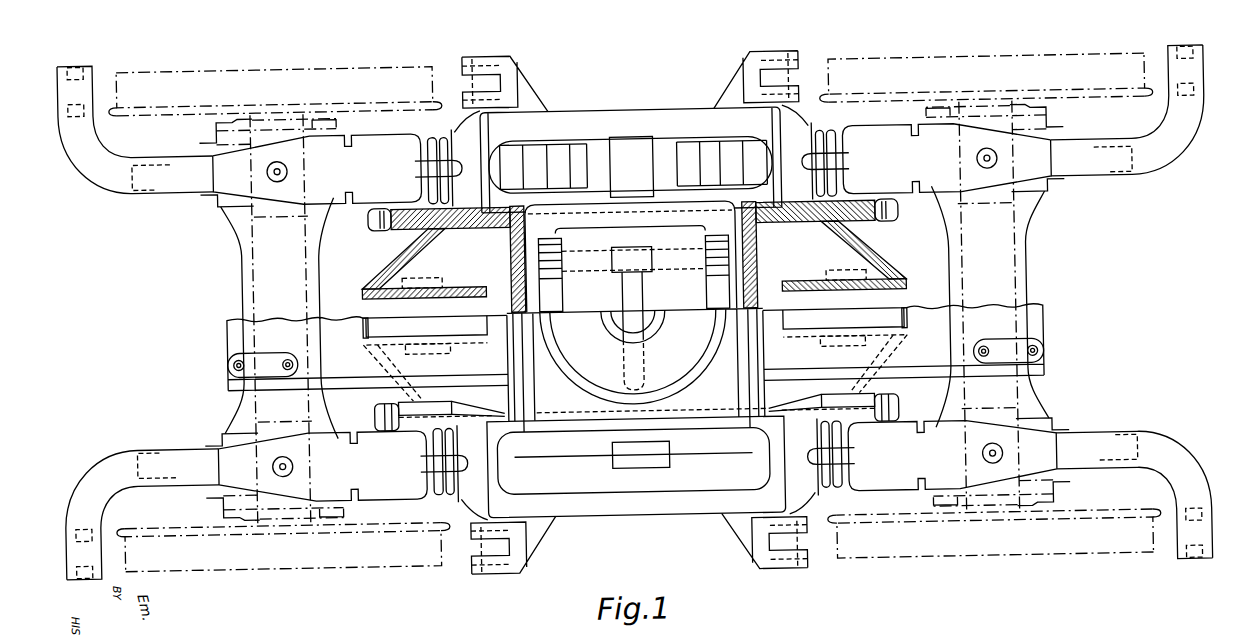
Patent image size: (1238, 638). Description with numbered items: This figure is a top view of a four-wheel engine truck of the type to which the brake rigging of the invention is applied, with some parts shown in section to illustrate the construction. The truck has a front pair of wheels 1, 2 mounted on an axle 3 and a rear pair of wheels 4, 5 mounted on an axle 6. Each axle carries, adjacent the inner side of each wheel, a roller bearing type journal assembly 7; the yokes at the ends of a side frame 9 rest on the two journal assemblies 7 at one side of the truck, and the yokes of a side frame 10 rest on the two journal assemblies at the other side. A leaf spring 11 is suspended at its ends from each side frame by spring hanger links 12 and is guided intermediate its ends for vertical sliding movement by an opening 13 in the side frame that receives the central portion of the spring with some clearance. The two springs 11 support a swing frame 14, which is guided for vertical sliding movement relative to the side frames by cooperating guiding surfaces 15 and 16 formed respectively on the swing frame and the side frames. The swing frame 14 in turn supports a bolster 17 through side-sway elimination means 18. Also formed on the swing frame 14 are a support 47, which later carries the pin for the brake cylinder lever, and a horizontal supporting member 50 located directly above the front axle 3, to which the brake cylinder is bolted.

The wheel 1 is at (992, 546).
The wheel 2 is at (996, 74).
The axle 3 is at (1020, 284).
The wheel 4 is at (288, 549).
The wheel 5 is at (280, 80).
The axle 6 is at (252, 294).
The journal assembly 7 is at (218, 127).
The side frame 9 is at (664, 507).
The side frame 10 is at (675, 120).
The leaf spring 11 is at (600, 150).
The spring hanger link 12 is at (418, 167).
The opening 13 is at (543, 146).
The swing frame 14 is at (257, 340).
The guiding surface 15 is at (374, 214).
The guiding surface 16 is at (430, 228).
The bolster 17 is at (617, 392).
The side-sway elimination means 18 is at (562, 285).
The support 47 is at (430, 294).
The horizontal supporting member 50 is at (257, 338).